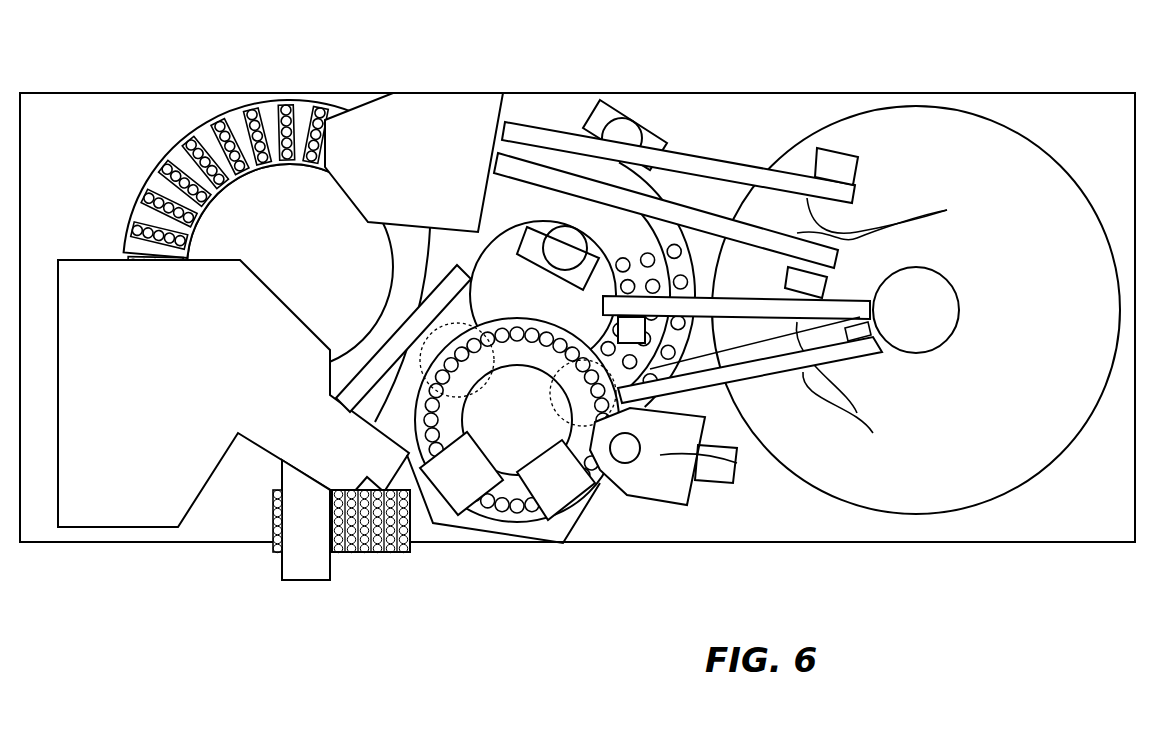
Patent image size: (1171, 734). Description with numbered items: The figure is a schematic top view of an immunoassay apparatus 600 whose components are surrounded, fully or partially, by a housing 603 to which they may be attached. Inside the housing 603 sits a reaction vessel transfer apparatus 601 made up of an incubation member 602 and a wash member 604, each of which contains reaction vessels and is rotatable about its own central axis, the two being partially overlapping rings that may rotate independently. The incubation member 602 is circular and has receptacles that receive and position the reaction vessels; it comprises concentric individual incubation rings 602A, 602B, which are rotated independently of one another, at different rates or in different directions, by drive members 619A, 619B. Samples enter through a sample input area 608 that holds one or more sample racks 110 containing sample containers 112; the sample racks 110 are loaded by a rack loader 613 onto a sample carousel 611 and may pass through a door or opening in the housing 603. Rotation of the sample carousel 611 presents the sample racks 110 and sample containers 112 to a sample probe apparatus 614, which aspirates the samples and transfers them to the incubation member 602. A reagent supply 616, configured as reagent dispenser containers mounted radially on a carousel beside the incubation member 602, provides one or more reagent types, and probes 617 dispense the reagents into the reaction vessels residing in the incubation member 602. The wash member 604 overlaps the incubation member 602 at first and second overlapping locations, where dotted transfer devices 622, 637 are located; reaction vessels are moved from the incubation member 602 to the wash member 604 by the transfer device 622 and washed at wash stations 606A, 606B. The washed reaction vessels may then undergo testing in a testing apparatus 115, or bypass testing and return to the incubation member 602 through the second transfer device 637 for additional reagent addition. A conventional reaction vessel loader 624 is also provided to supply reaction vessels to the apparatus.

The immunoassay apparatus 600 is at (577, 333).
The reaction vessel transfer apparatus 601 is at (634, 530).
The incubation member 602 is at (649, 161).
The incubation ring 602A is at (537, 157).
The incubation ring 602B is at (585, 213).
The housing 603 is at (178, 92).
The wash member 604 is at (522, 534).
The wash station 606A is at (463, 472).
The wash station 606B is at (560, 493).
The sample input area 608 is at (363, 559).
The sample carousel 611 is at (172, 135).
The rack loader 613 is at (307, 582).
The sample probe apparatus 614 is at (442, 160).
The reagent supply 616 is at (1015, 124).
The probe 617 is at (898, 324).
The drive member 619A is at (628, 133).
The drive member 619B is at (674, 250).
The transfer device 622 is at (437, 322).
The reaction vessel loader 624 is at (212, 380).
The second transfer device 637 is at (620, 363).
The sample rack 110 is at (398, 553).
The sample container 112 is at (272, 537).
The testing apparatus 115 is at (665, 455).